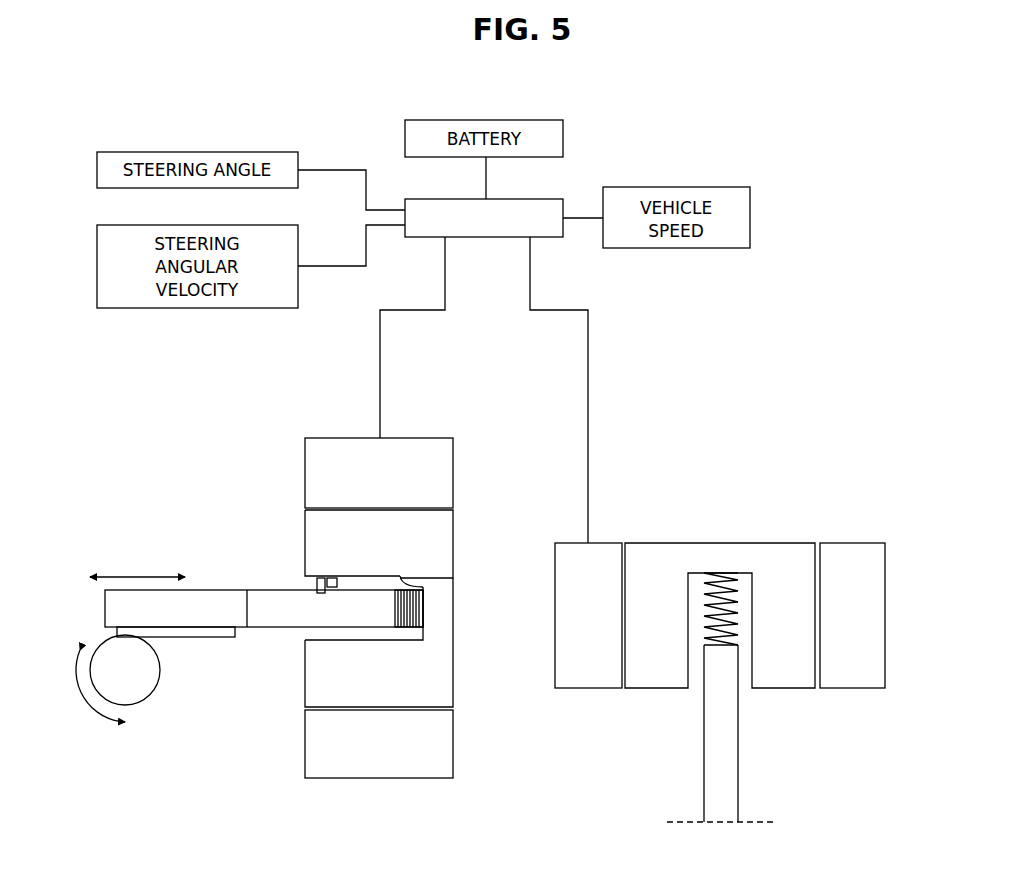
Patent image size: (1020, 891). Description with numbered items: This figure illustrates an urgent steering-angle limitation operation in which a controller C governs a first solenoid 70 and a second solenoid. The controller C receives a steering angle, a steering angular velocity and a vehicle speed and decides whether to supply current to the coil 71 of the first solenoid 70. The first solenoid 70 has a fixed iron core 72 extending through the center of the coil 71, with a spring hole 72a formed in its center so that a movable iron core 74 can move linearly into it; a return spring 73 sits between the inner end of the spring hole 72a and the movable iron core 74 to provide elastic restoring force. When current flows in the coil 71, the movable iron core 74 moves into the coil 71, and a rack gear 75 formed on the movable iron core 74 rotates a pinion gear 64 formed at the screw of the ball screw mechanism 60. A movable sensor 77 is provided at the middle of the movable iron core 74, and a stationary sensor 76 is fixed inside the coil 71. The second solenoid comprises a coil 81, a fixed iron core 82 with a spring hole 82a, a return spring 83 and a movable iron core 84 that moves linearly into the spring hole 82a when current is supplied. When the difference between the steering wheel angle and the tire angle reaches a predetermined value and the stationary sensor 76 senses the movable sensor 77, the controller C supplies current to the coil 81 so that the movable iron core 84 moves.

The controller C is at (547, 237).
The ball screw mechanism 60 is at (145, 708).
The pinion gear 64 is at (150, 678).
The first solenoid 70 is at (426, 608).
The coil 71 is at (442, 470).
The fixed iron core 72 is at (438, 662).
The spring hole 72a is at (422, 587).
The return spring 73 is at (423, 608).
The movable iron core 74 is at (260, 602).
The rack gear 75 is at (117, 634).
The stationary sensor 76 is at (332, 578).
The movable sensor 77 is at (317, 583).
The coil 81 is at (847, 557).
The fixed iron core 82 is at (775, 557).
The spring hole 82a is at (692, 612).
The return spring 83 is at (642, 557).
The movable iron core 84 is at (728, 755).